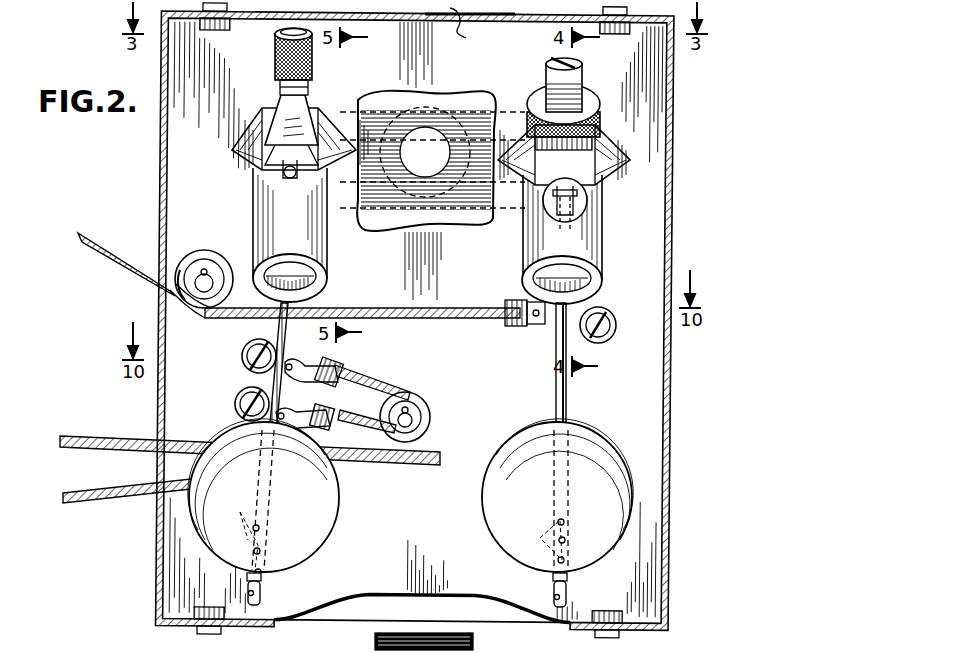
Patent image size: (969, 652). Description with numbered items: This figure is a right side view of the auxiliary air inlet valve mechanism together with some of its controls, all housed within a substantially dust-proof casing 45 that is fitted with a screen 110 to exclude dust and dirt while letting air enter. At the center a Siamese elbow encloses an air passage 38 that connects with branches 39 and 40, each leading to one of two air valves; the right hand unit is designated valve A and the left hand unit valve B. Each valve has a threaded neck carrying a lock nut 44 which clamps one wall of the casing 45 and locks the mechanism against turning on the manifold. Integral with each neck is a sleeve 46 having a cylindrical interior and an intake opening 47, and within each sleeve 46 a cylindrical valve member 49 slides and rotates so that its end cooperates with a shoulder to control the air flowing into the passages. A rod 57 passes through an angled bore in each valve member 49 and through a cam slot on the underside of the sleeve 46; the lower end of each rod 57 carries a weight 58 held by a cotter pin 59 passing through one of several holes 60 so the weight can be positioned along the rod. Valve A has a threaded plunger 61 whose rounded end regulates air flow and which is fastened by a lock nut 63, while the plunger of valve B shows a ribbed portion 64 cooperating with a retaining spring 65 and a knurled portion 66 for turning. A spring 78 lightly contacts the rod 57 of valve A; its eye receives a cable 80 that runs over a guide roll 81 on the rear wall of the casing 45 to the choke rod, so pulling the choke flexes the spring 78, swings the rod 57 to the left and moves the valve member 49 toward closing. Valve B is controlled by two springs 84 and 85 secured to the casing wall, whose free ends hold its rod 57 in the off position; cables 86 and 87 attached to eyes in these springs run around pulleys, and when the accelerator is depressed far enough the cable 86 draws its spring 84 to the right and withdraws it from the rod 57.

The air passage 38 is at (432, 154).
The branch 39 is at (488, 118).
The branch 40 is at (380, 135).
The lock nut 44 is at (248, 123).
The casing 45 is at (178, 194).
The sleeve 46 is at (286, 165).
The opening 47 is at (283, 170).
The cylindrical valve member 49 is at (306, 282).
The rod 57 is at (278, 333).
The weight 58 is at (285, 517).
The cotter pin 59 is at (261, 577).
The hole 60 is at (278, 604).
The threaded plunger 61 is at (582, 84).
The lock nut 63 is at (596, 104).
The ribbed portion 64 is at (280, 90).
The retaining spring 65 is at (300, 125).
The knurled portion 66 is at (277, 58).
The spring 78 is at (604, 337).
The cable 80 is at (462, 310).
The guide roll 81 is at (213, 254).
The spring 84 is at (284, 412).
The spring 85 is at (300, 360).
The cable 86 is at (182, 448).
The cable 87 is at (148, 486).
The screen 110 is at (470, 29).
The valve A is at (579, 183).
The valve B is at (262, 216).